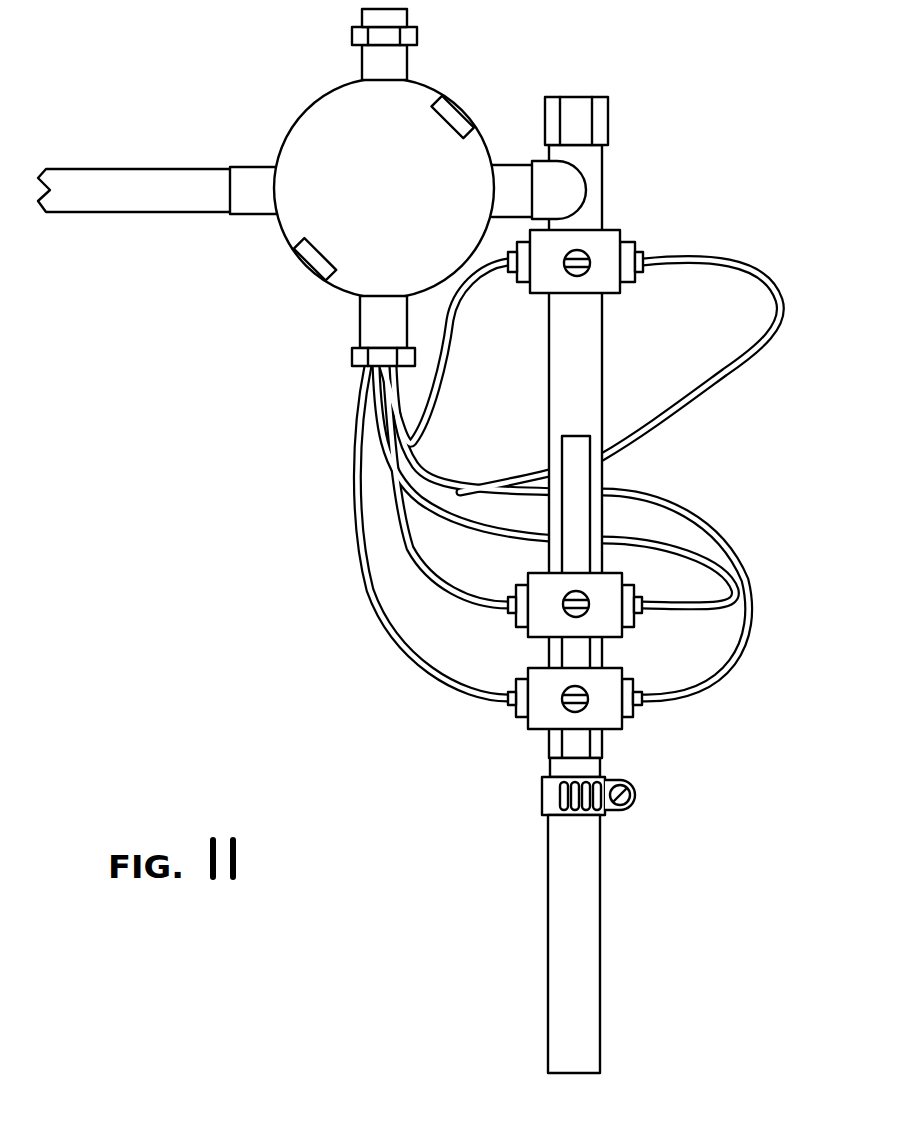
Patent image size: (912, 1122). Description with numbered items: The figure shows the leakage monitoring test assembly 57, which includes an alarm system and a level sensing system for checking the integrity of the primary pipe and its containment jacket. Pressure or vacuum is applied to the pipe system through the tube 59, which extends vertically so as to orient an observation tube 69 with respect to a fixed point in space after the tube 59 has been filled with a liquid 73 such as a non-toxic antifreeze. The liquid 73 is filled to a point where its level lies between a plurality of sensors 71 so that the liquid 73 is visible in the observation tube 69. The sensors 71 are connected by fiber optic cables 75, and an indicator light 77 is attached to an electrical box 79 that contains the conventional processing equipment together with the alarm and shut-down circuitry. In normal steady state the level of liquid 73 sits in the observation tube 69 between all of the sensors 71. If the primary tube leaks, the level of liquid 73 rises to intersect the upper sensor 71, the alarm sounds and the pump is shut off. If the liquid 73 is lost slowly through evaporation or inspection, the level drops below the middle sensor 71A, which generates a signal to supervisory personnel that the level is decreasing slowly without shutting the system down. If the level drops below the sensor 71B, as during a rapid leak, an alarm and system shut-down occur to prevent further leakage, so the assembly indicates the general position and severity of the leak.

The test assembly 57 is at (637, 113).
The tube 59 is at (558, 962).
The observation tube 69 is at (602, 368).
The sensors 71 is at (620, 232).
The middle sensor 71A is at (528, 573).
The lower sensor 71B is at (528, 731).
The liquid 73 is at (562, 436).
The fiber optic cables 75 is at (772, 332).
The indicator light 77 is at (410, 22).
The electrical box 79 is at (317, 127).